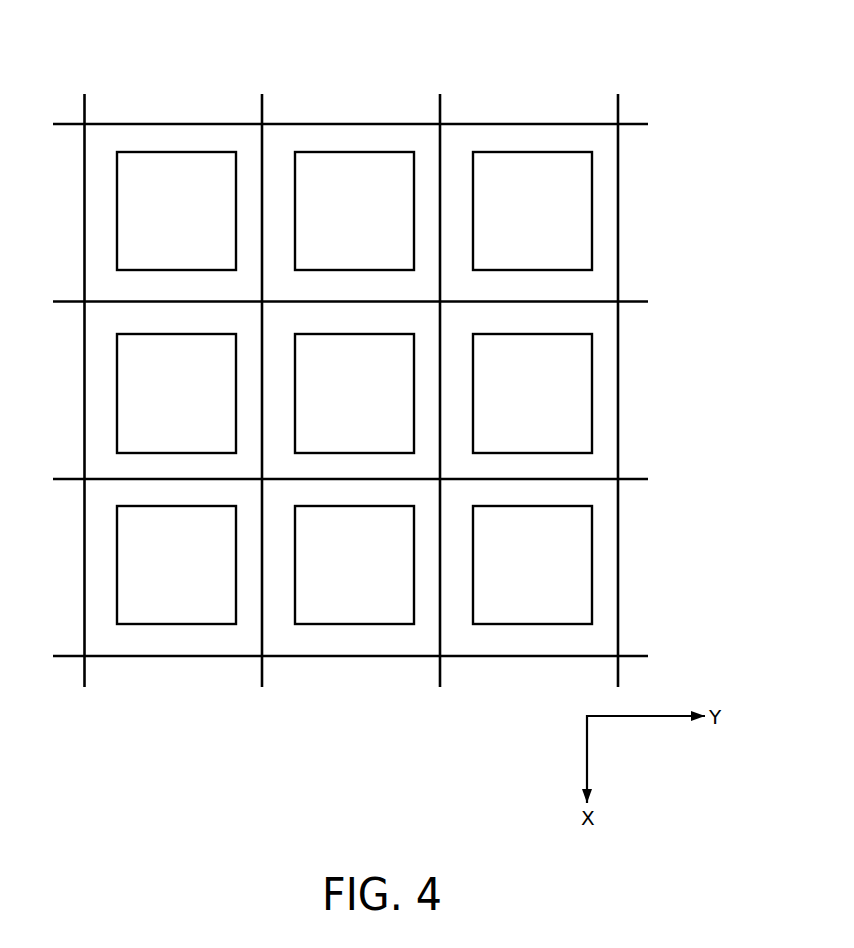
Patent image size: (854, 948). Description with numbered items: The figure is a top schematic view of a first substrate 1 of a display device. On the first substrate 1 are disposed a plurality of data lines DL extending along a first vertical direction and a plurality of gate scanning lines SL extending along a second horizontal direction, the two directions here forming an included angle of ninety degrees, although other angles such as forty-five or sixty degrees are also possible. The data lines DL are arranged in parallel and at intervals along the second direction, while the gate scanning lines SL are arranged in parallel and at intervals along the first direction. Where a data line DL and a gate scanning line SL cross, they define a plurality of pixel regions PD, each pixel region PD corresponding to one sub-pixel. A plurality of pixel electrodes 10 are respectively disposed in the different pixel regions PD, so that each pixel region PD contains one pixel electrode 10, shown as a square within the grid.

The first substrate 1 is at (381, 399).
The pixel electrode 10 is at (512, 405).
The pixel region PD is at (324, 228).
The data line DL is at (262, 593).
The gate scanning line SL is at (332, 658).